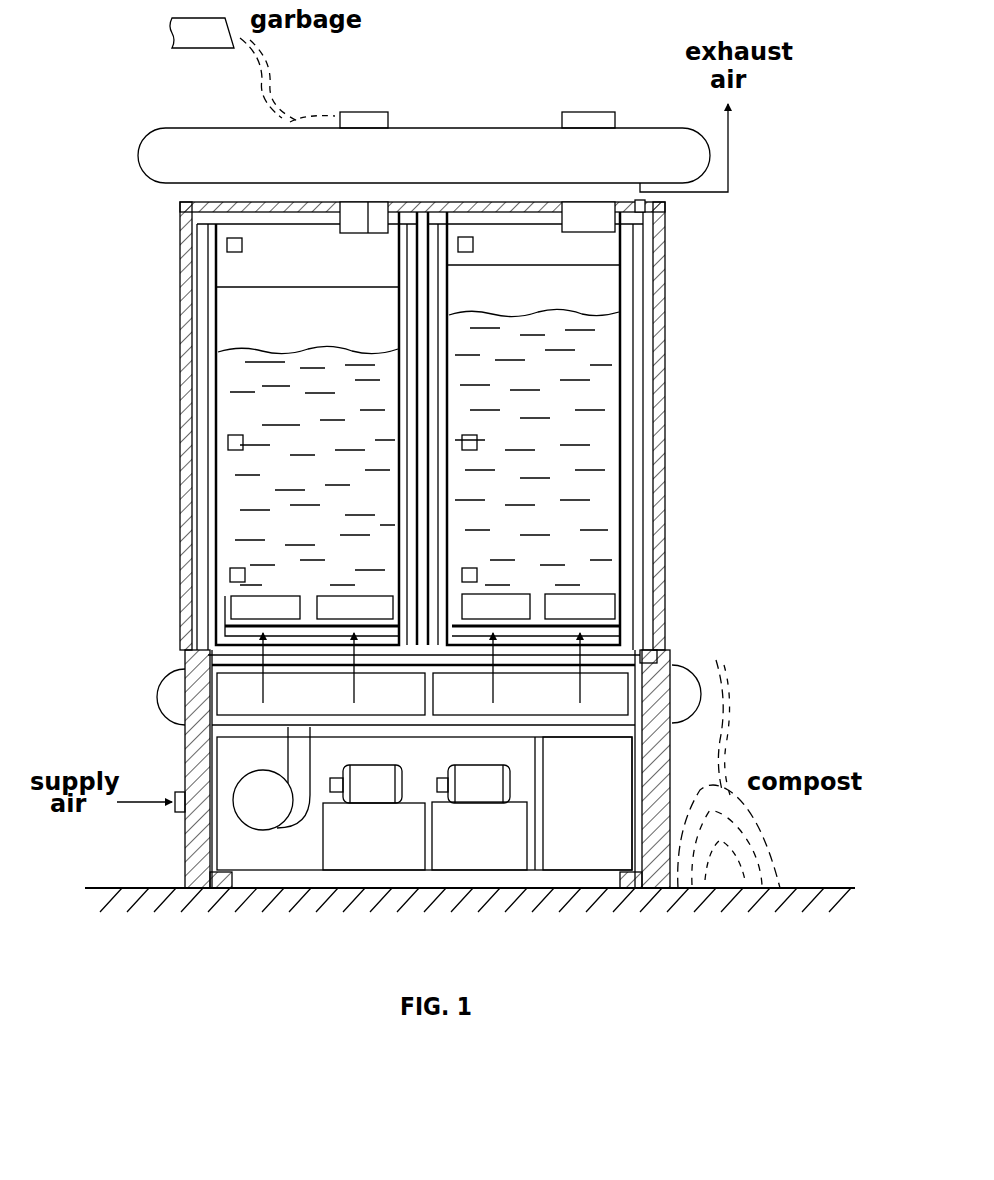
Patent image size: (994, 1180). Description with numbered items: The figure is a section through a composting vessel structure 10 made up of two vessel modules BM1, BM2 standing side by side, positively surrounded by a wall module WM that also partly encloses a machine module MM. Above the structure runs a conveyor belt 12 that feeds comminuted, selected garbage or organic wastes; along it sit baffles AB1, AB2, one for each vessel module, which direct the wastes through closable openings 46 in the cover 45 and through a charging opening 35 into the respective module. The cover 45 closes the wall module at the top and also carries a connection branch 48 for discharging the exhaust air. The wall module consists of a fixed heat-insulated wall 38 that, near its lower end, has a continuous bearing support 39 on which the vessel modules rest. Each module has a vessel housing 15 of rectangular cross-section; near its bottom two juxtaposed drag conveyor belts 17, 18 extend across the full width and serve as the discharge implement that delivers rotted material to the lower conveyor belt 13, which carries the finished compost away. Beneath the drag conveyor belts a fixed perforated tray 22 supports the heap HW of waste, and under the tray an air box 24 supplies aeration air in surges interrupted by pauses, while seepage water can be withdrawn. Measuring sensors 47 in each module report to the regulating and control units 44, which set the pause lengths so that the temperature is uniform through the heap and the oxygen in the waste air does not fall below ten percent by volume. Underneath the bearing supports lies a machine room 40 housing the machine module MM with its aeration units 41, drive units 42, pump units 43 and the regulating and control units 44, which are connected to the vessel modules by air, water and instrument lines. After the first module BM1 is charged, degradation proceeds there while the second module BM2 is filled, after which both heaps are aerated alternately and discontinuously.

The vessel structure 10 is at (751, 286).
The conveyor belt 12 is at (481, 124).
The conveyor belt 13 is at (693, 710).
The vessel housing 15 is at (212, 309).
The drag conveyor belt 17 is at (355, 604).
The drag conveyor belt 18 is at (278, 604).
The perforated tray 22 is at (230, 626).
The air box 24 is at (232, 637).
The charging opening 35 is at (340, 232).
The heat-insulated wall 38 is at (188, 510).
The bearing support 39 is at (668, 653).
The machine room 40 is at (238, 738).
The aeration unit 41 is at (262, 815).
The drive unit 42 is at (386, 840).
The pump unit 43 is at (478, 845).
The regulating and control unit 44 is at (594, 845).
The cover 45 is at (215, 217).
The closable opening 46 is at (372, 233).
The measuring sensor 47 is at (242, 245).
The connection branch 48 is at (665, 221).
The baffle AB1 is at (373, 112).
The baffle AB2 is at (587, 112).
The vessel module BM1 is at (236, 378).
The vessel module BM2 is at (615, 375).
The heap HW is at (245, 481).
The wall module WM is at (670, 511).
The machine module MM is at (278, 855).